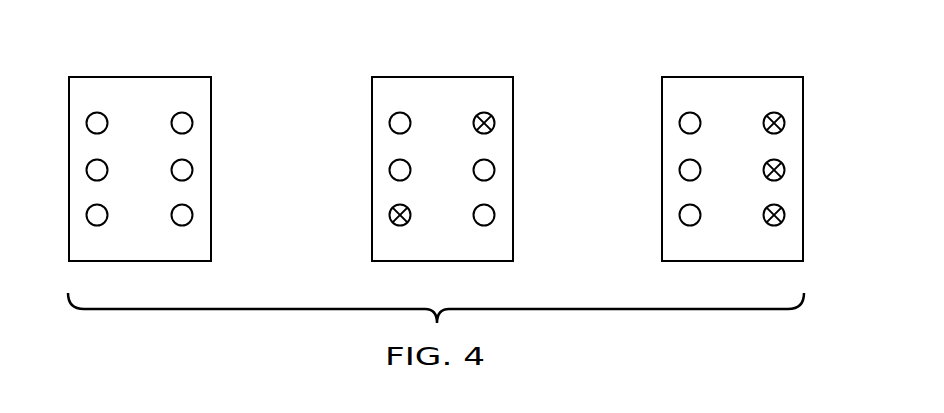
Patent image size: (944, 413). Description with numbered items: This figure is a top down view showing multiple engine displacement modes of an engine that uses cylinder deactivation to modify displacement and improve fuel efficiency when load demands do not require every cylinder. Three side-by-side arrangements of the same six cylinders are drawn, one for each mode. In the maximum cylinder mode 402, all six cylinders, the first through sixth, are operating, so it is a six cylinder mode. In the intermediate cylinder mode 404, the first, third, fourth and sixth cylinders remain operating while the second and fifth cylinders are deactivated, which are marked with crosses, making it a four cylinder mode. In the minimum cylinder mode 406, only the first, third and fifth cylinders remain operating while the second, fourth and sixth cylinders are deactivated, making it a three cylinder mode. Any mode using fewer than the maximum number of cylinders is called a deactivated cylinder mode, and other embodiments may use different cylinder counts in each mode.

The maximum cylinder mode 402 is at (138, 77).
The intermediate cylinder mode 404 is at (441, 77).
The minimum cylinder mode 406 is at (731, 77).